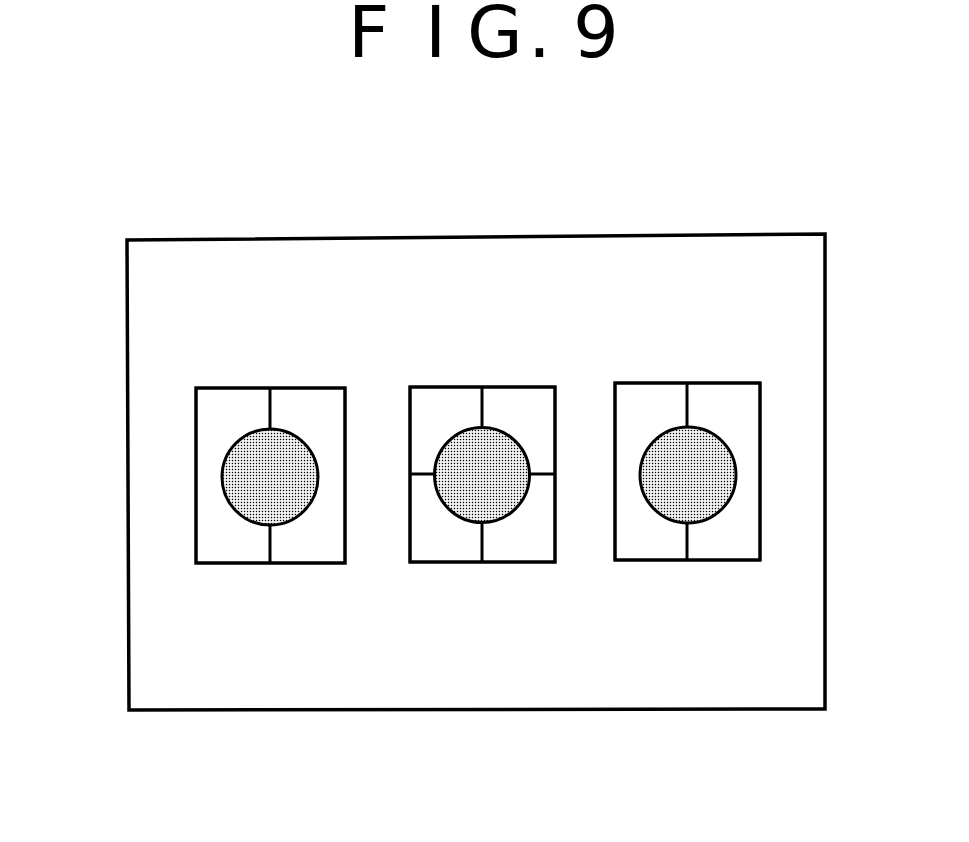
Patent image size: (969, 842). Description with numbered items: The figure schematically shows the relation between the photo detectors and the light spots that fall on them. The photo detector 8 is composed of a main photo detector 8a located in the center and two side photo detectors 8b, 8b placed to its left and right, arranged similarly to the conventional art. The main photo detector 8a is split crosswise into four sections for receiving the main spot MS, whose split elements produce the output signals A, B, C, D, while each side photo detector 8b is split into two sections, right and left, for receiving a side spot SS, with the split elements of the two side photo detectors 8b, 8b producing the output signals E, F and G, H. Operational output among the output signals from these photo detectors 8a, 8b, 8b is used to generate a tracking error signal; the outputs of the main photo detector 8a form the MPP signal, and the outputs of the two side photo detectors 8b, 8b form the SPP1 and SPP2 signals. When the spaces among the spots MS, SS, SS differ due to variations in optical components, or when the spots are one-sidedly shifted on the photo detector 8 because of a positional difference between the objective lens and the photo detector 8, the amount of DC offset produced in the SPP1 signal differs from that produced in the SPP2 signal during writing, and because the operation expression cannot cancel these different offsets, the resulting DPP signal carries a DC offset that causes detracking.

The photo detector 8 is at (787, 302).
The main photo detector 8a is at (470, 565).
The side photo detector 8b is at (245, 567).
The side spot SS is at (222, 483).
The main spot MS is at (510, 437).
The main push-pull signal MPP is at (482, 372).
The first side push-pull signal SPP1 is at (687, 370).
The second side push-pull signal SPP2 is at (270, 373).
The output signal A is at (457, 568).
The output signal B is at (518, 595).
The output signal C is at (531, 405).
The output signal D is at (446, 405).
The output signal E is at (710, 448).
The output signal F is at (662, 381).
The output signal G is at (294, 450).
The output signal H is at (246, 383).